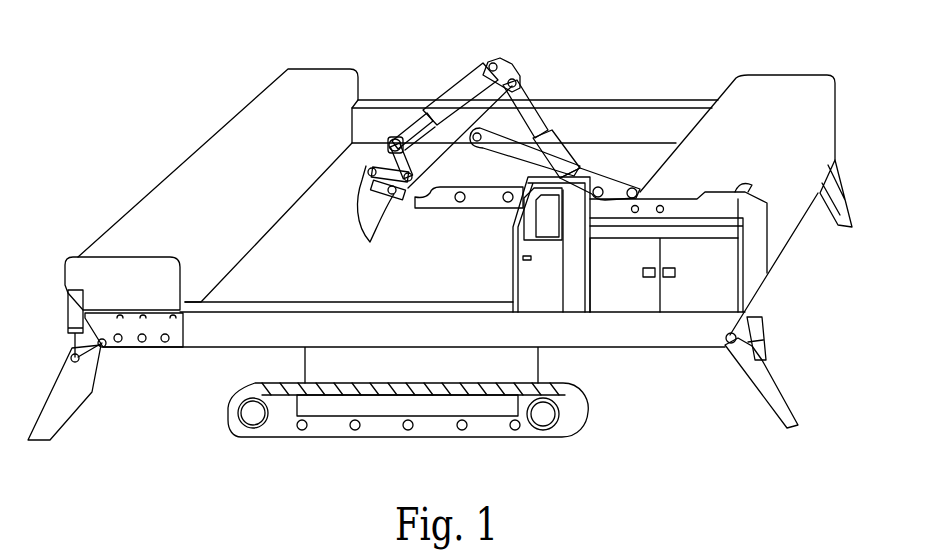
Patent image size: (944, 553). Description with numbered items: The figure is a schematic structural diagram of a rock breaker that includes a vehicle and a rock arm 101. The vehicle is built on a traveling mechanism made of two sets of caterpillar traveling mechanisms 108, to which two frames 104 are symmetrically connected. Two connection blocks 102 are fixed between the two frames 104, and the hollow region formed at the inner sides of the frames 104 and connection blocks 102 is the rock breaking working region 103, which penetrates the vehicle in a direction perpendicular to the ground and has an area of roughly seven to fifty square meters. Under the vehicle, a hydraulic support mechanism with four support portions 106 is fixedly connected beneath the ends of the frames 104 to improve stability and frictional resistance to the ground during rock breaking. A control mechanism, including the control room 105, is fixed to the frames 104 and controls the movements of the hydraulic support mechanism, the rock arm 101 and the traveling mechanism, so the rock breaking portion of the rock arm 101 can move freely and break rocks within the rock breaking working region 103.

The rock arm 101 is at (525, 42).
The connection block 102 is at (812, 43).
The rock breaking working region 103 is at (628, 42).
The frame 104 is at (588, 42).
The control room 105 is at (675, 42).
The support portion 106 is at (868, 147).
The caterpillar traveling mechanism 108 is at (478, 428).